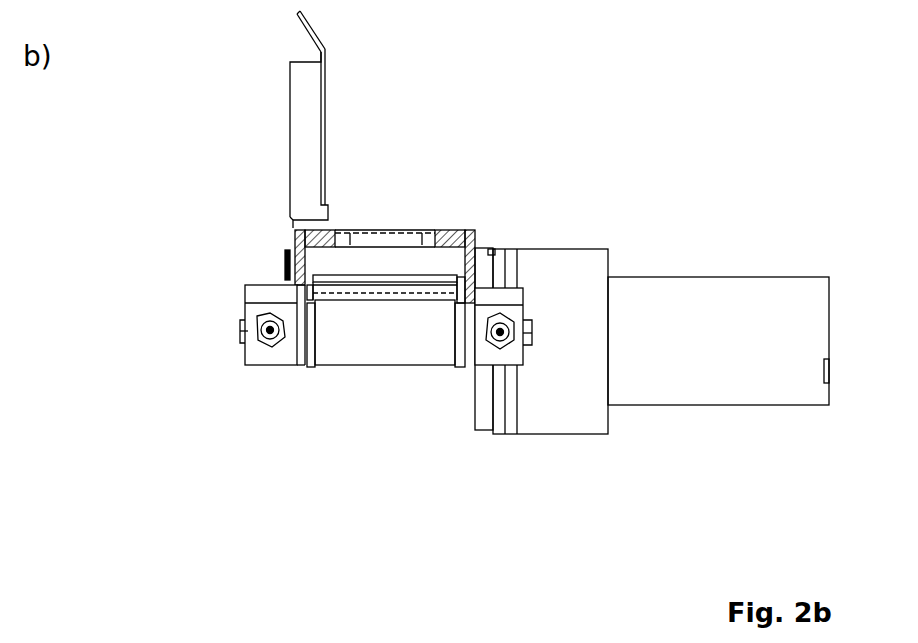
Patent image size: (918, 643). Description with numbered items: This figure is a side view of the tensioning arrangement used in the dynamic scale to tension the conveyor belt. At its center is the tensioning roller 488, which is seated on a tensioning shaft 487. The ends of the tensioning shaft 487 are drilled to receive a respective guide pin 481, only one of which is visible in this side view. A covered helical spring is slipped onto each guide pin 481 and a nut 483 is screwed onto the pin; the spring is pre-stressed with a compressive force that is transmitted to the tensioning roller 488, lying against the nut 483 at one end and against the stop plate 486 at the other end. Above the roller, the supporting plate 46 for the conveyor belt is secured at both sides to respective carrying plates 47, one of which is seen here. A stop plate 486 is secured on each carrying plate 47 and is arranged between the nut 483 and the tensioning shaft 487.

The supporting plate 46 is at (397, 232).
The carrying plate 47 is at (294, 240).
The guide pin 481 is at (270, 330).
The nut 483 is at (257, 318).
The stop plate 486 is at (282, 357).
The tensioning shaft 487 is at (240, 331).
The tensioning roller 488 is at (377, 335).